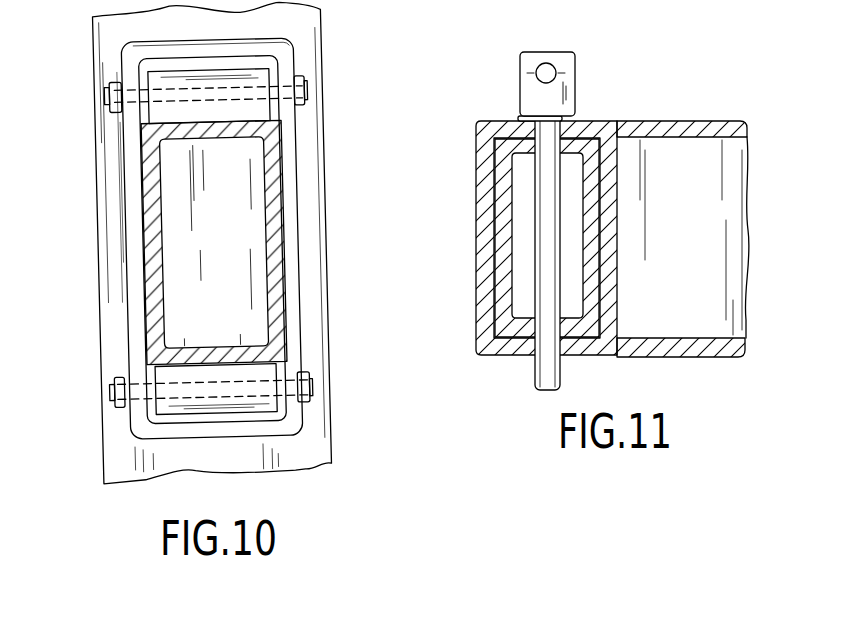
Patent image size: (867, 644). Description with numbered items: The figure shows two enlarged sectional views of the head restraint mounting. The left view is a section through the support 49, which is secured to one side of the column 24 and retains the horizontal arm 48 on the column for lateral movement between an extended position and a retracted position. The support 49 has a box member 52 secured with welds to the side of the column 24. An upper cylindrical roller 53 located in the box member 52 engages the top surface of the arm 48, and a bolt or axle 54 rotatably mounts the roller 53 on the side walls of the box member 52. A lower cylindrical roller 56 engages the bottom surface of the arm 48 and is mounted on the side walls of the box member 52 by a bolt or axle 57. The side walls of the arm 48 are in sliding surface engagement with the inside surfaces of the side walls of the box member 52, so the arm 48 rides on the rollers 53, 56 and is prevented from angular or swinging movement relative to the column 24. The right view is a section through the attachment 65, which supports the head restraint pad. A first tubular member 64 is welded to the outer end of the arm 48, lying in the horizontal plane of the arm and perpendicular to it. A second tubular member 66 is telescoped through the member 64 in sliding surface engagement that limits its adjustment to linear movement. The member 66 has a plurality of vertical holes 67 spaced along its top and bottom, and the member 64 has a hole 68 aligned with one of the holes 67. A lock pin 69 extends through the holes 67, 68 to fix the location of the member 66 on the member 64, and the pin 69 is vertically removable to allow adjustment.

In FIG. 10, the column 24 is at (308, 453).
In FIG. 10, the horizontal arm 48 is at (152, 300).
In FIG. 11, the horizontal arm 48 is at (688, 343).
In FIG. 10, the support 49 is at (128, 252).
In FIG. 10, the box member 52 is at (135, 165).
In FIG. 10, the upper cylindrical roller 53 is at (153, 112).
In FIG. 10, the bolt or axle 54 is at (108, 95).
In FIG. 10, the lower cylindrical roller 56 is at (176, 408).
In FIG. 10, the bolt or axle 57 is at (117, 393).
In FIG. 11, the first tubular member 64 is at (487, 200).
In FIG. 11, the attachment 65 is at (459, 271).
In FIG. 11, the second tubular member 66 is at (508, 298).
In FIG. 11, the vertical holes 67 is at (512, 160).
In FIG. 11, the hole 68 is at (518, 120).
In FIG. 11, the lock pin 69 is at (567, 62).